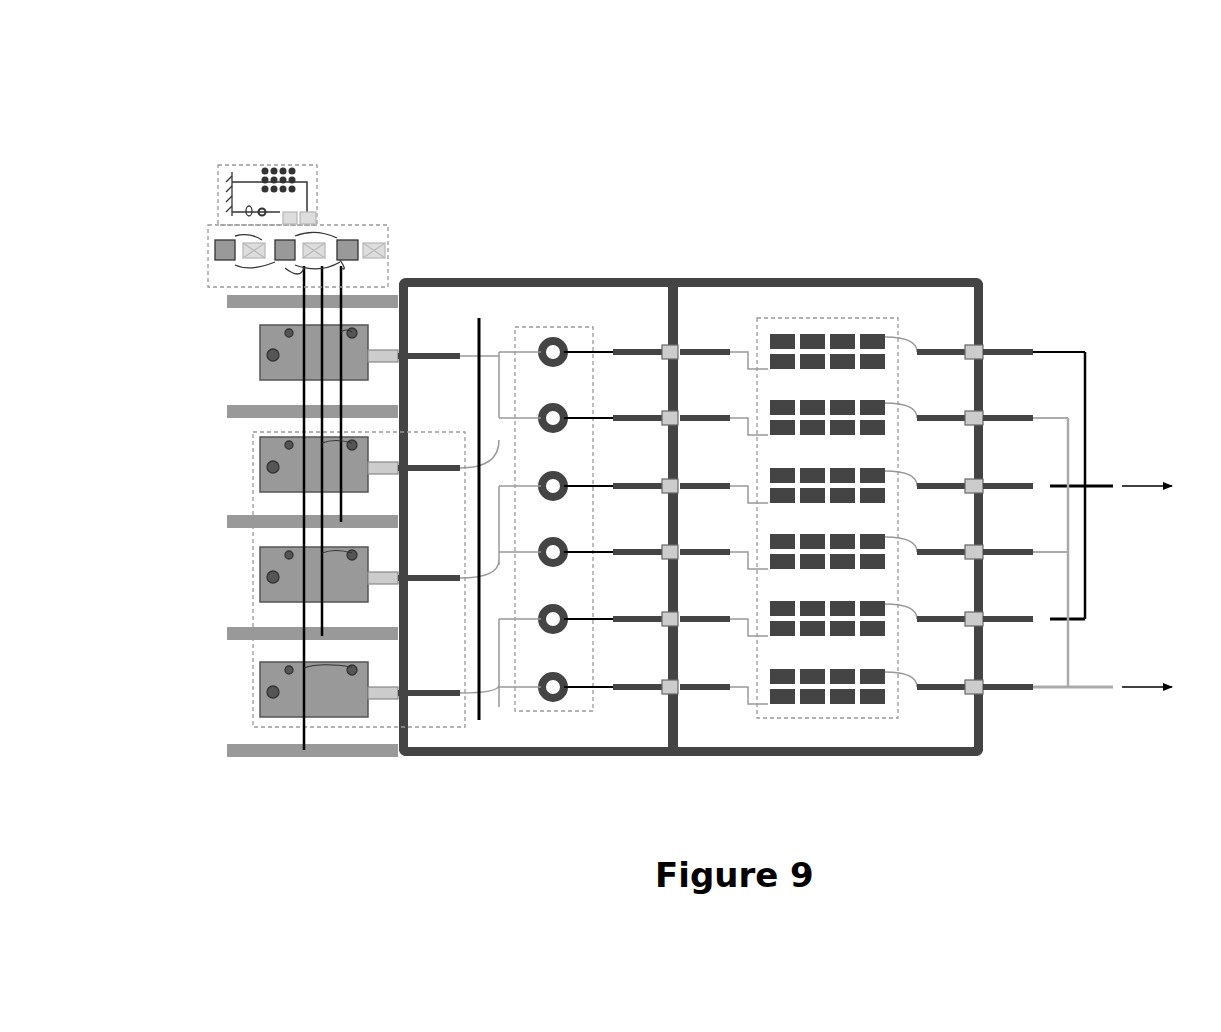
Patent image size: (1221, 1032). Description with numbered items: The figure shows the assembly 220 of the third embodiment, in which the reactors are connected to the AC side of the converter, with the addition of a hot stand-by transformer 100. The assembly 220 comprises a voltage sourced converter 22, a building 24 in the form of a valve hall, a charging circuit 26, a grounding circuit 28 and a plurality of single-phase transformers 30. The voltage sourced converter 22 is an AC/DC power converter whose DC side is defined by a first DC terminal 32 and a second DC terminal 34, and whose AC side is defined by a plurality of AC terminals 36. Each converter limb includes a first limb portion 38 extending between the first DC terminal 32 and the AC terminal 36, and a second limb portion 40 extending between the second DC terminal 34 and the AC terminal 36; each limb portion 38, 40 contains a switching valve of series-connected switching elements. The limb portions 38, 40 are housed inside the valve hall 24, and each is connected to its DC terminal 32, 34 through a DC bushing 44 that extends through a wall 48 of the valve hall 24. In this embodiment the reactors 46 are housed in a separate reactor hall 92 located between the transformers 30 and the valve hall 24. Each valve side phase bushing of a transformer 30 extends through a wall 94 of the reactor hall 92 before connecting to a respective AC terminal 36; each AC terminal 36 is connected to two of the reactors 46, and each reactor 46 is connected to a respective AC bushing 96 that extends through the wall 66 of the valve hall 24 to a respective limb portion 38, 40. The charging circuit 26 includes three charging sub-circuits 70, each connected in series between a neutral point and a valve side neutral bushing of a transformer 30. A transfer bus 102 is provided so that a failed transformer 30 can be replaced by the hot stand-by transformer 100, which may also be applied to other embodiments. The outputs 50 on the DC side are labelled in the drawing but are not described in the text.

The assembly 220 is at (328, 123).
The grounding circuit 28 is at (215, 172).
The charging sub-circuit 70 is at (360, 242).
The charging circuit 26 is at (207, 248).
The hot stand-by transformer 100 is at (256, 352).
The single-phase transformer 30 is at (254, 463).
The wall of the reactor hall 94 is at (410, 298).
The transfer bus 102 is at (480, 318).
The reactor 46 is at (533, 330).
The AC terminal 36 is at (495, 418).
The AC bushing 96 is at (638, 360).
The wall of the valve hall 66 is at (680, 300).
The first limb portion 38 is at (893, 358).
The second limb portion 40 is at (893, 425).
The wall of the valve hall 48 is at (983, 298).
The DC bushing 44 is at (1003, 359).
The first DC terminal 32 is at (1090, 481).
The dispensing outlet 50 is at (1168, 587).
The second DC terminal 34 is at (1078, 678).
The voltage sourced converter 22 is at (946, 716).
The building 24 is at (865, 758).
The reactor hall 92 is at (470, 755).